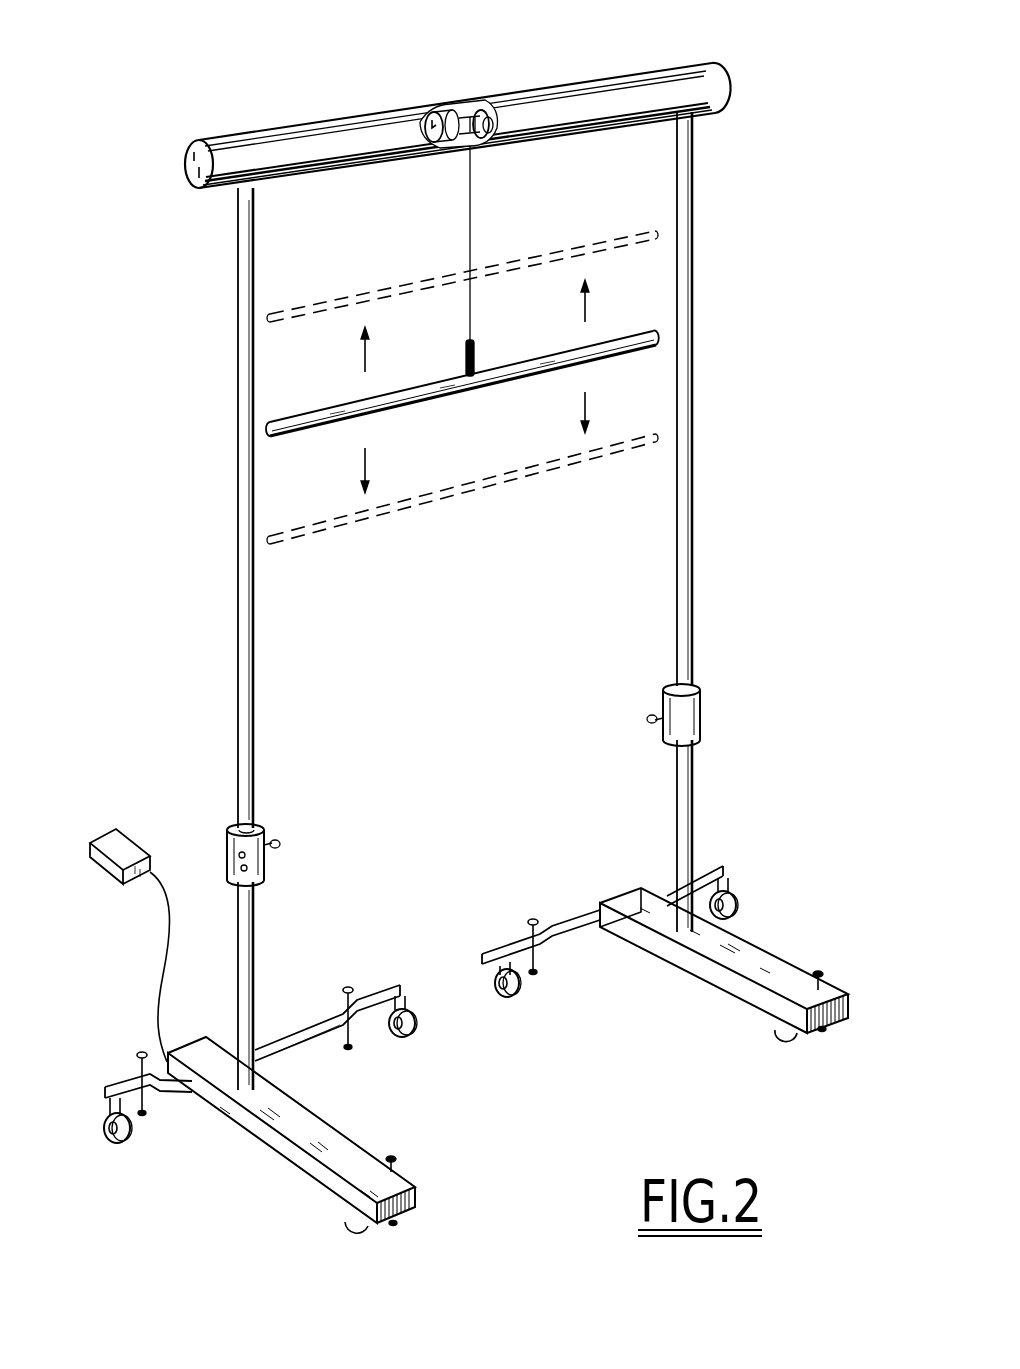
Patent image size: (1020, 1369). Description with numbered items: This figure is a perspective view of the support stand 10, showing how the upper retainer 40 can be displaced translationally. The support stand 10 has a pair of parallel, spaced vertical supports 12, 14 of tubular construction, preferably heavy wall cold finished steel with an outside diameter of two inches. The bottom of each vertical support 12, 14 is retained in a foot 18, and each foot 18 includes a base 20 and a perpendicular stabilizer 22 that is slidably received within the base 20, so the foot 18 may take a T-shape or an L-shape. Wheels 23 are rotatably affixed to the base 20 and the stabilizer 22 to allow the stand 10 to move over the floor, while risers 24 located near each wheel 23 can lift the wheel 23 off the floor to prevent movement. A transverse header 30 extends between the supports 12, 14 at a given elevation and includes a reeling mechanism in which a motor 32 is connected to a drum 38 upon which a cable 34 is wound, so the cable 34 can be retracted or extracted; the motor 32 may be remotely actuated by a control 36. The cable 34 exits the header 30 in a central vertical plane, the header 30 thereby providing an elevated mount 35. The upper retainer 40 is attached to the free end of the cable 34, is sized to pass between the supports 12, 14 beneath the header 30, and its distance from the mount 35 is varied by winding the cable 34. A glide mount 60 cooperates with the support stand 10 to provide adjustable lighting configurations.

The support stand 10 is at (721, 401).
The vertical support 12 is at (238, 630).
The vertical support 14 is at (694, 478).
The foot 18 is at (250, 1150).
The base 20 is at (345, 1142).
The stabilizer 22 is at (312, 1045).
The wheel 23 is at (125, 1143).
The riser 24 is at (140, 1052).
The transverse header 30 is at (590, 74).
The motor 32 is at (440, 110).
The cable 34 is at (472, 242).
The elevated mount 35 is at (480, 150).
The control 36 is at (111, 876).
The drum 38 is at (483, 110).
The upper retainer 40 is at (622, 332).
The glide mount 60 is at (702, 708).